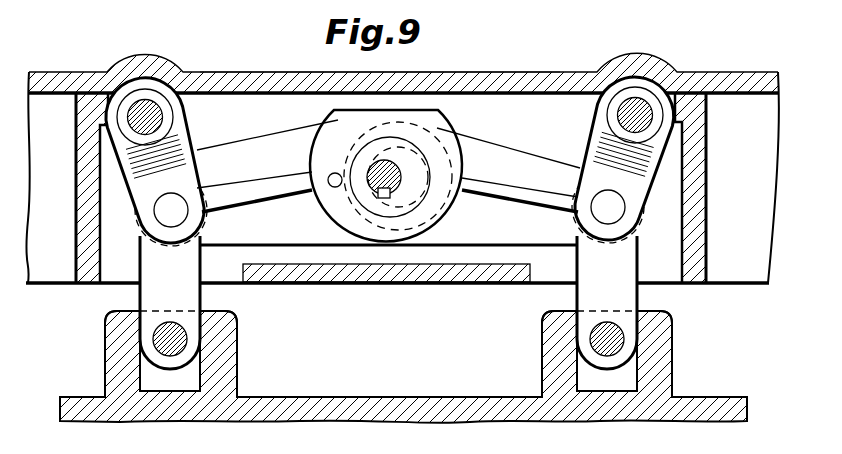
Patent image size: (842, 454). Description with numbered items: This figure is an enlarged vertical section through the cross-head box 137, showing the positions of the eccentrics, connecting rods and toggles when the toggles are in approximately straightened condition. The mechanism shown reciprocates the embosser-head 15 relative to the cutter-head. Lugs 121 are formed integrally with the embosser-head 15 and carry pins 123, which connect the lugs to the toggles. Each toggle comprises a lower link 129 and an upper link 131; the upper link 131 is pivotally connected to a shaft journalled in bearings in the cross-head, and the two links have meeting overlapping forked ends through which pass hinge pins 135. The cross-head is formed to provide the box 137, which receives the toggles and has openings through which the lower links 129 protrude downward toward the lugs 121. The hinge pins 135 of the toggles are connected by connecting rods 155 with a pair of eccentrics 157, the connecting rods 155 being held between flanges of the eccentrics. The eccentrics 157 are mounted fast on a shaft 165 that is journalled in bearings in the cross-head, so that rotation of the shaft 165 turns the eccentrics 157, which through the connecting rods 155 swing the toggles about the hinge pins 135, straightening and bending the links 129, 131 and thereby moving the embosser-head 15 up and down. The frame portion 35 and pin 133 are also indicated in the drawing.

The embosser-head 15 is at (369, 406).
The frame 35 is at (549, 73).
The lug 121 is at (232, 360).
The pin 123 is at (172, 341).
The lower link 129 is at (201, 298).
The upper link 131 is at (187, 153).
The pivot pin 133 is at (150, 117).
The hinge pin 135 is at (177, 211).
The box 137 is at (270, 92).
The connecting rod 155 is at (276, 153).
The eccentric 157 is at (397, 152).
The shaft 165 is at (402, 178).